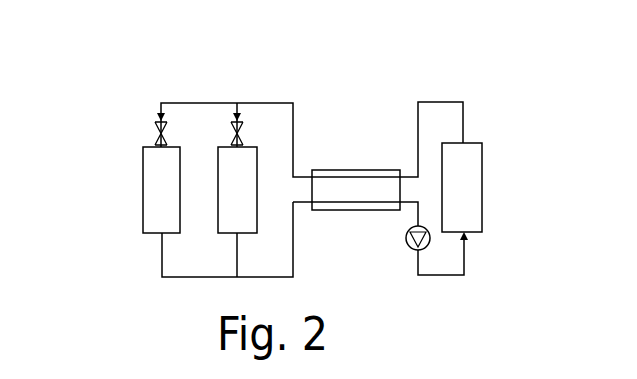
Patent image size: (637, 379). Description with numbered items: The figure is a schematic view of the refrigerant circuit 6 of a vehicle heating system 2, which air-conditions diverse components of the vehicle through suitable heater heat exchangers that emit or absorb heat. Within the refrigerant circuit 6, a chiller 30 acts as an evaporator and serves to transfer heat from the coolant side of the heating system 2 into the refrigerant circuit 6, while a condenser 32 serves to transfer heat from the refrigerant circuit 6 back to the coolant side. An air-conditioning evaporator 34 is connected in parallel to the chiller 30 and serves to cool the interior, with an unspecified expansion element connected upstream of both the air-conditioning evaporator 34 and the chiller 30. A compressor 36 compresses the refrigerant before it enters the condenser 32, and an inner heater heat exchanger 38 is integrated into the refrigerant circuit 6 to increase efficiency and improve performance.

The heating system 2 is at (96, 85).
The refrigerant circuit 6 is at (121, 140).
The chiller 30 is at (237, 190).
The condenser 32 is at (462, 187).
The air-conditioning evaporator 34 is at (161, 190).
The compressor 36 is at (406, 242).
The inner heater heat exchanger 38 is at (338, 168).